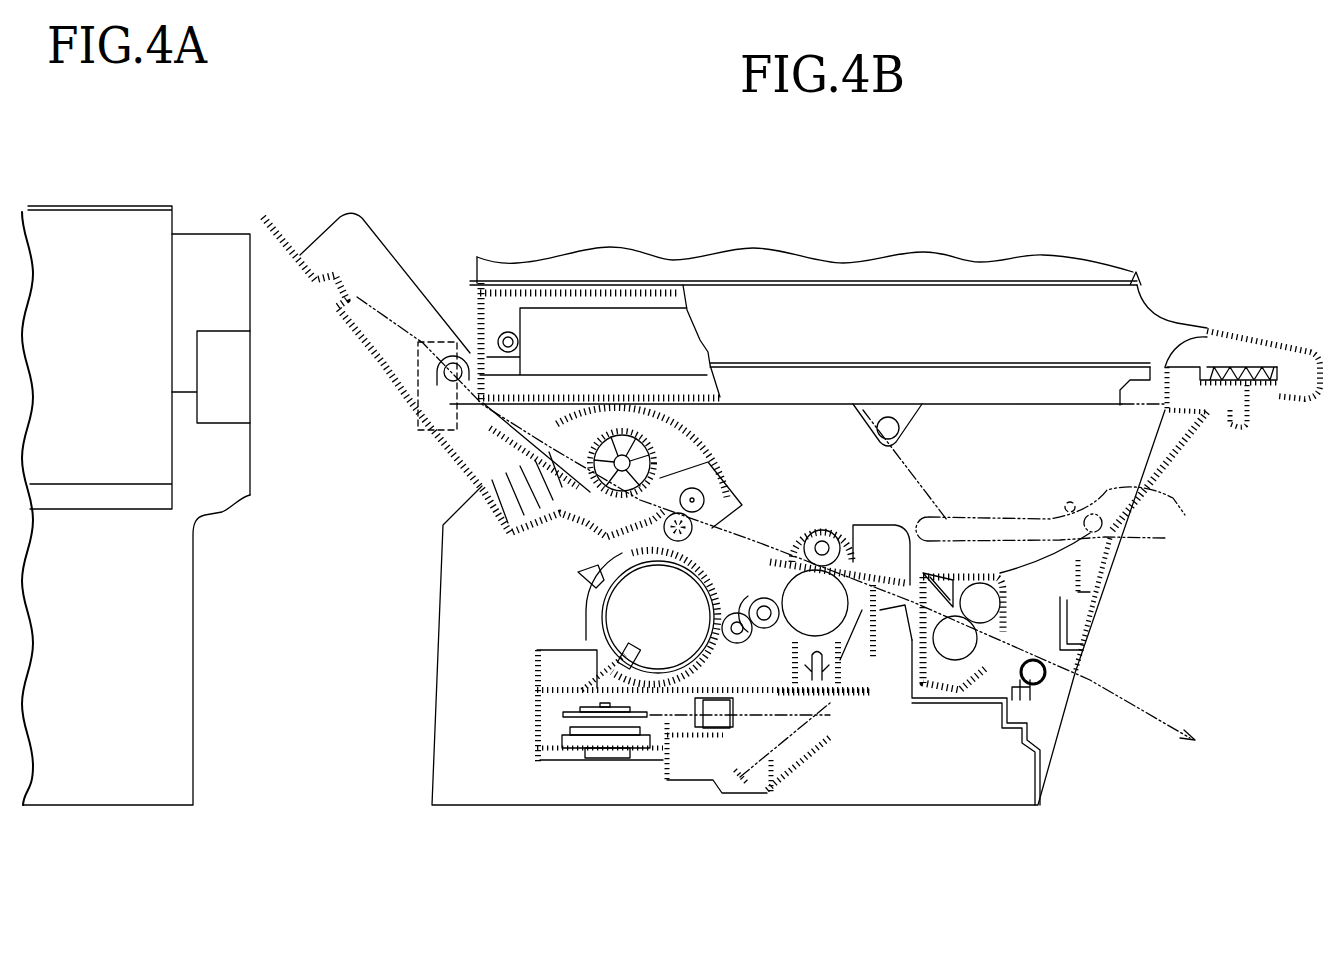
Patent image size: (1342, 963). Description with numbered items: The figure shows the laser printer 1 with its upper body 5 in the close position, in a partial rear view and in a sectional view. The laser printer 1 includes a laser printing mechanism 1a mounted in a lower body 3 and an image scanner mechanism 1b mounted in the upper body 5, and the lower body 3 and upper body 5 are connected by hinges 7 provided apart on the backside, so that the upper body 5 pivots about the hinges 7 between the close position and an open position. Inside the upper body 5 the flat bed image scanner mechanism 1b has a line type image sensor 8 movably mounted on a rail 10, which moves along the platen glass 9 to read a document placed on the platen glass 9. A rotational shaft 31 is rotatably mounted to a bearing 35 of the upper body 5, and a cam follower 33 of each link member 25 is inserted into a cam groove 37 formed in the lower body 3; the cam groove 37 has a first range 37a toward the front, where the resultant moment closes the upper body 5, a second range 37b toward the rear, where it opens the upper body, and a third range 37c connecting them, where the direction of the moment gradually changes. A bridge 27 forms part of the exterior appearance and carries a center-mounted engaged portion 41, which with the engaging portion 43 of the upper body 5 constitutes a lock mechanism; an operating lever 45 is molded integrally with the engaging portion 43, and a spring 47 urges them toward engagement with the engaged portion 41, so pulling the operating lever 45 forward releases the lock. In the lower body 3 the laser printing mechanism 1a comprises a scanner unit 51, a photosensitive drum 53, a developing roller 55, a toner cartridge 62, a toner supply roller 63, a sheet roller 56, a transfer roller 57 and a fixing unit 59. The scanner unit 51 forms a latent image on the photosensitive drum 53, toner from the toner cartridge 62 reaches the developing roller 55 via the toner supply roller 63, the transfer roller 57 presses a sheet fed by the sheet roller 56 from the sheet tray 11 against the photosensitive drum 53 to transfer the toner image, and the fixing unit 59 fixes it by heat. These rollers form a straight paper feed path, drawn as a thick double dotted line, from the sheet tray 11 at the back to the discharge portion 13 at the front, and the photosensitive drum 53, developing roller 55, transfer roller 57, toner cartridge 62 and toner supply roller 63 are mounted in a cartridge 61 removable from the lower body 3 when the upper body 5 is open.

In FIG. 4B, the laser printer 1 is at (786, 203).
In FIG. 4B, the laser printing mechanism 1a is at (503, 718).
In FIG. 4B, the image scanner mechanism 1b is at (478, 314).
In FIG. 4A, the lower body 3 is at (163, 683).
In FIG. 4B, the lower body 3 is at (452, 640).
In FIG. 4A, the upper body 5 is at (218, 248).
In FIG. 4B, the upper body 5 is at (943, 260).
In FIG. 4A, the hinges 7 is at (236, 390).
In FIG. 4B, the hinges 7 is at (452, 383).
In FIG. 4B, the line type image sensor 8 is at (650, 330).
In FIG. 4B, the platen glass 9 is at (590, 292).
In FIG. 4B, the rail 10 is at (508, 340).
In FIG. 4A, the sheet tray 11 is at (78, 223).
In FIG. 4B, the sheet tray 11 is at (372, 350).
In FIG. 4B, the discharge portion 13 is at (1050, 685).
In FIG. 4B, the link member 25 is at (920, 502).
In FIG. 4B, the bridge 27 is at (1175, 430).
In FIG. 4B, the rotational shaft 31 is at (878, 430).
In FIG. 4B, the cam follower 33 is at (1125, 537).
In FIG. 4B, the bearing 35 is at (858, 405).
In FIG. 4B, the cam groove 37 is at (1145, 492).
In FIG. 4B, the first range 37a is at (1103, 523).
In FIG. 4B, the second range 37b is at (965, 517).
In FIG. 4B, the third range 37c is at (1050, 540).
In FIG. 4B, the engaged portion 41 is at (1207, 340).
In FIG. 4B, the engaging portion 43 is at (1195, 400).
In FIG. 4B, the operating lever 45 is at (1255, 402).
In FIG. 4B, the spring 47 is at (1255, 377).
In FIG. 4B, the scanner unit 51 is at (690, 770).
In FIG. 4B, the photosensitive drum 53 is at (833, 618).
In FIG. 4B, the developing roller 55 is at (762, 610).
In FIG. 4B, the sheet roller 56 is at (648, 448).
In FIG. 4B, the transfer roller 57 is at (758, 503).
In FIG. 4B, the fixing unit 59 is at (1003, 573).
In FIG. 4B, the cartridge 61 is at (818, 540).
In FIG. 4B, the toner cartridge 62 is at (622, 607).
In FIG. 4B, the toner supply roller 63 is at (737, 645).